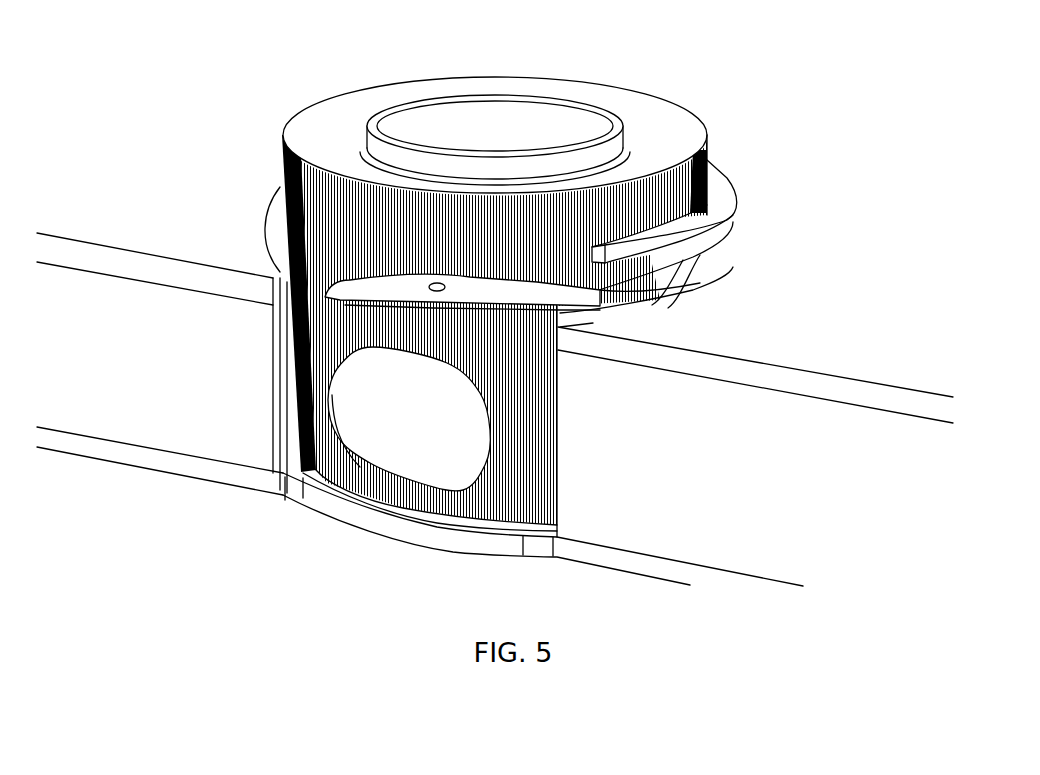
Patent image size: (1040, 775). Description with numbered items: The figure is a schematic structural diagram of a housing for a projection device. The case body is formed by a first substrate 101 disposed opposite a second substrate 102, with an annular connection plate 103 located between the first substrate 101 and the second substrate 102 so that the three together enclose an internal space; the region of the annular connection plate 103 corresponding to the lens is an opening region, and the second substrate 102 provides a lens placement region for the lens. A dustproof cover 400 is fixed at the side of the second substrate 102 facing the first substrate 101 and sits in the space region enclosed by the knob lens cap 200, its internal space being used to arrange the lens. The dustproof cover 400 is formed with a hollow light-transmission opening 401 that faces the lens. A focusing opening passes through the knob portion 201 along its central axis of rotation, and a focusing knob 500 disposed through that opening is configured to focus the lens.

The first substrate 101 is at (743, 372).
The second substrate 102 is at (647, 563).
The annular connection plate 103 is at (210, 390).
The knob lens cap 200 is at (682, 135).
The knob portion 201 is at (280, 183).
The dustproof cover 400 is at (303, 462).
The hollow light-transmission opening 401 is at (422, 447).
The focusing knob 500 is at (480, 125).